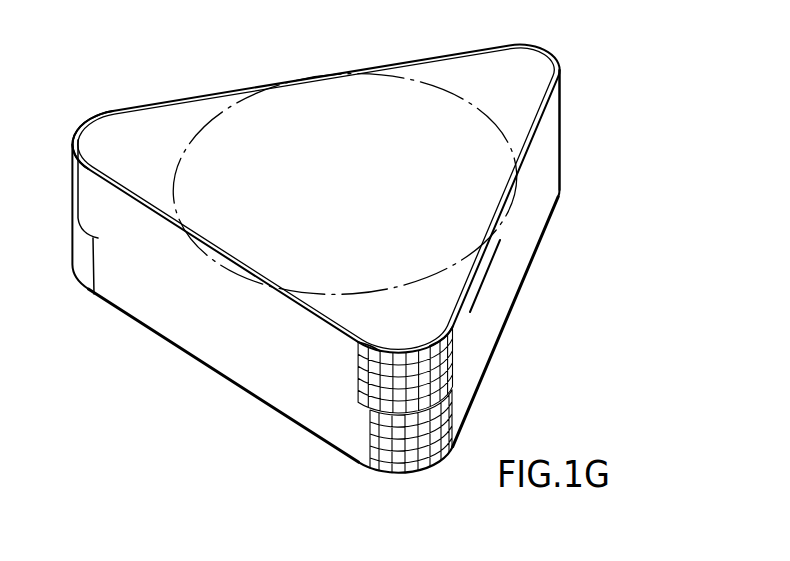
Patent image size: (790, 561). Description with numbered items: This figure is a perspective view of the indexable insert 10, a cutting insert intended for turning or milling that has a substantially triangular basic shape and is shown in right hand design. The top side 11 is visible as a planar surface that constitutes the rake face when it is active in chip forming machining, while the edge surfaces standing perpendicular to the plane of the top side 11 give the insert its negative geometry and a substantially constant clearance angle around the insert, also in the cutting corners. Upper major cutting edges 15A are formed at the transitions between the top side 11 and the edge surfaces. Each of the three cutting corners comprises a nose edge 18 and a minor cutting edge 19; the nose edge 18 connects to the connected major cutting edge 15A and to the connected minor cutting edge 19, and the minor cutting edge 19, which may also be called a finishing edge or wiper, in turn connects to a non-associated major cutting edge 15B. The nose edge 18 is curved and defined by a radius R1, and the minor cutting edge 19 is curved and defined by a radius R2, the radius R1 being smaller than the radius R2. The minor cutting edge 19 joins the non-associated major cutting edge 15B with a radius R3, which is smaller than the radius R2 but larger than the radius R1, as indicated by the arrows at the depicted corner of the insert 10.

The indexable insert 10 is at (379, 236).
The top side 11 is at (433, 75).
The nose edge 18 is at (530, 46).
The minor cutting edge 19 is at (561, 80).
The upper major cutting edge 15A is at (492, 247).
The non-associated major cutting edge 15B is at (140, 200).
The radius of the nose edge R1 is at (434, 349).
The radius of the minor cutting edge R2 is at (398, 352).
The connecting radius R3 is at (375, 348).